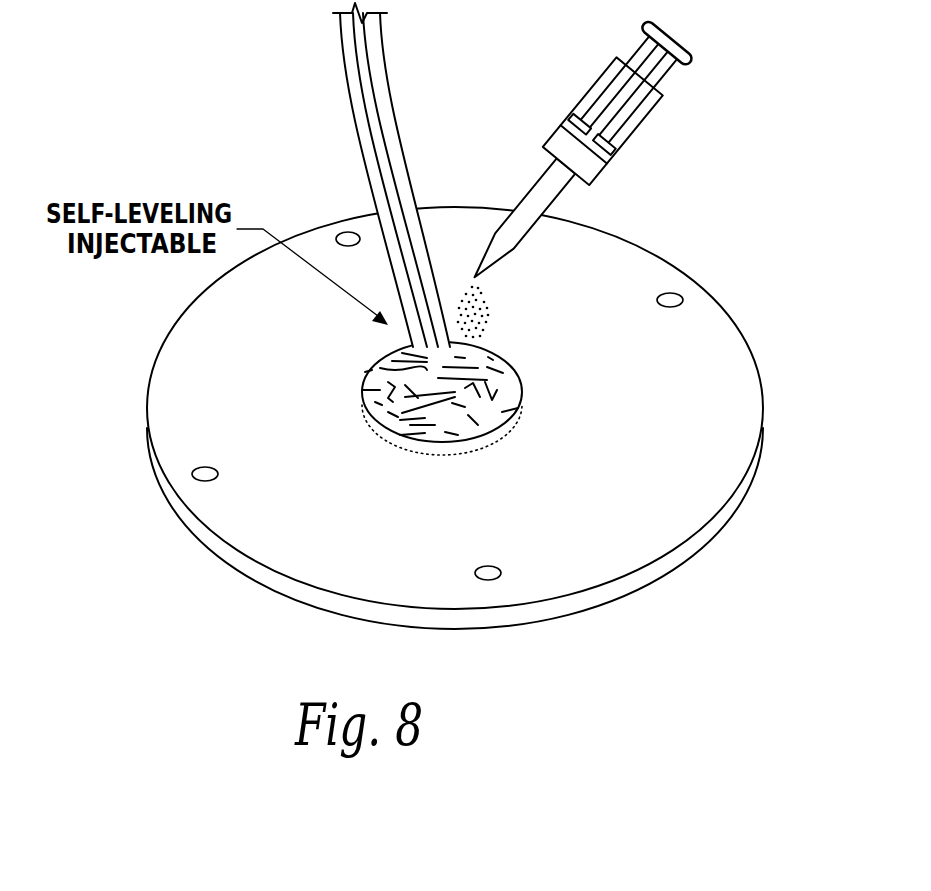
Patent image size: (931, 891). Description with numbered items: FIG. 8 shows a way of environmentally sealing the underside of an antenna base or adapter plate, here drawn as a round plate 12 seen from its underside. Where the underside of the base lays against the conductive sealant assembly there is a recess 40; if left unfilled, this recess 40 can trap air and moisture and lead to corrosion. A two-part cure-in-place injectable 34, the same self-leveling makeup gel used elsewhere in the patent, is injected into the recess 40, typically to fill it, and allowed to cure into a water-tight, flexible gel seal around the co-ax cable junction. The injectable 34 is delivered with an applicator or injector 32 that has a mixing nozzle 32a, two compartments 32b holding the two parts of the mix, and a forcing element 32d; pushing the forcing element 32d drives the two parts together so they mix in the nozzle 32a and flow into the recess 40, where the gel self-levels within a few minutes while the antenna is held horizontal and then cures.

The disc / support plate 12 is at (228, 597).
The injector 32 is at (610, 157).
The mixing nozzle 32a is at (520, 221).
The compartment 32b is at (603, 121).
The forcing element 32d is at (667, 42).
The injectable cure-in-place gel sealant 34 is at (477, 337).
The recess 40 is at (498, 438).